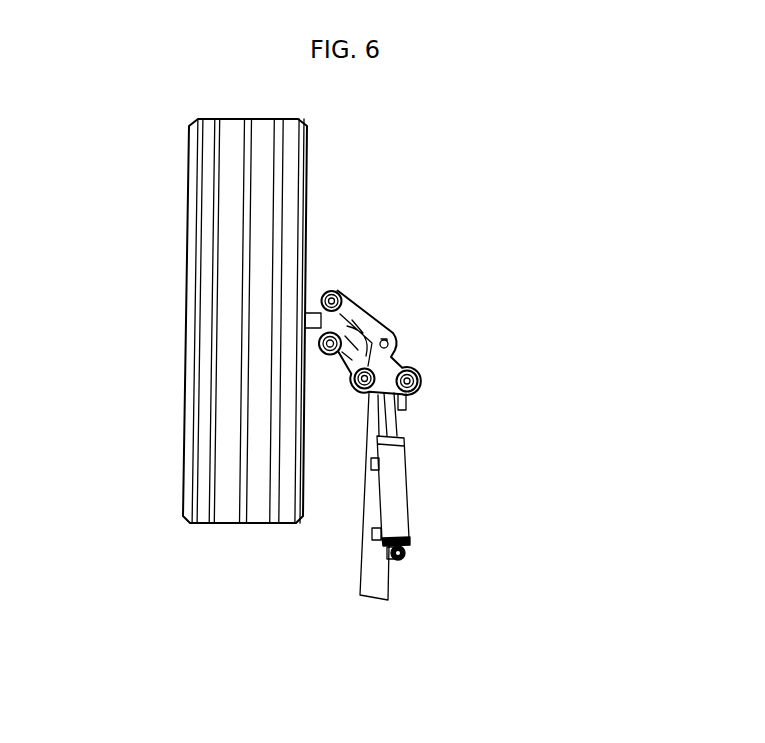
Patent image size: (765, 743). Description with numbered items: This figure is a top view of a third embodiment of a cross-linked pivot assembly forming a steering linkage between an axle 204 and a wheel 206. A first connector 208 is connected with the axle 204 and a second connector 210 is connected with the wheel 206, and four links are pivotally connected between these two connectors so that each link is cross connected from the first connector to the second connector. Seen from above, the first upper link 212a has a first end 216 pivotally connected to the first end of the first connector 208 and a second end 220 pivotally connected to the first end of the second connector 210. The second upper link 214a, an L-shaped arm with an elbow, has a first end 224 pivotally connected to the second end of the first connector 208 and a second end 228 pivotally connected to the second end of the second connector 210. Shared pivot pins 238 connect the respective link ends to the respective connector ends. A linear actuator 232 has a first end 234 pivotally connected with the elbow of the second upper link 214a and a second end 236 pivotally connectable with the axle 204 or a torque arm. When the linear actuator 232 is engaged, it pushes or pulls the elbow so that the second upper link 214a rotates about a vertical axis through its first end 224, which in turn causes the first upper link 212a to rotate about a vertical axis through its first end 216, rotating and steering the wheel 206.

The axle 204 is at (372, 565).
The wheel 206 is at (197, 125).
The first connector 208 is at (405, 402).
The second connector 210 is at (320, 328).
The first upper link 212a is at (350, 368).
The second upper link 214a is at (362, 315).
The first end of first upper link 216 is at (414, 372).
The second end of first upper link 220 is at (325, 353).
The first end of second upper link 224 is at (418, 392).
The second end of second upper link 228 is at (333, 291).
The linear actuator 232 is at (397, 485).
The first end of linear actuator 234 is at (388, 340).
The second end of linear actuator 236 is at (407, 558).
The shared pivot pins 238 is at (338, 290).